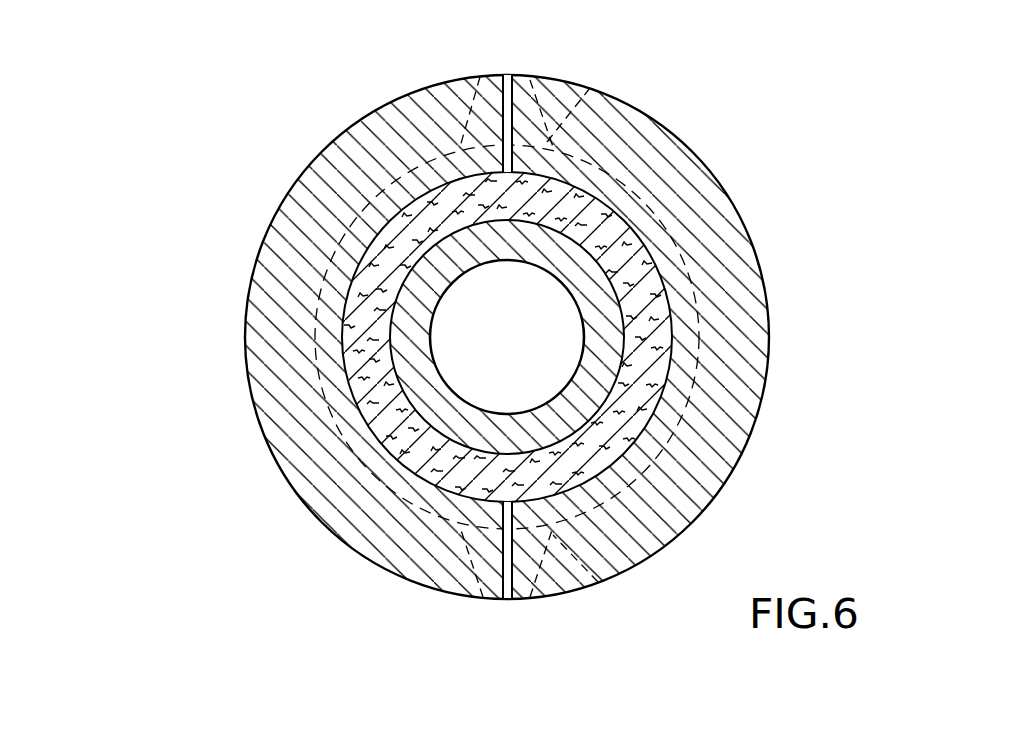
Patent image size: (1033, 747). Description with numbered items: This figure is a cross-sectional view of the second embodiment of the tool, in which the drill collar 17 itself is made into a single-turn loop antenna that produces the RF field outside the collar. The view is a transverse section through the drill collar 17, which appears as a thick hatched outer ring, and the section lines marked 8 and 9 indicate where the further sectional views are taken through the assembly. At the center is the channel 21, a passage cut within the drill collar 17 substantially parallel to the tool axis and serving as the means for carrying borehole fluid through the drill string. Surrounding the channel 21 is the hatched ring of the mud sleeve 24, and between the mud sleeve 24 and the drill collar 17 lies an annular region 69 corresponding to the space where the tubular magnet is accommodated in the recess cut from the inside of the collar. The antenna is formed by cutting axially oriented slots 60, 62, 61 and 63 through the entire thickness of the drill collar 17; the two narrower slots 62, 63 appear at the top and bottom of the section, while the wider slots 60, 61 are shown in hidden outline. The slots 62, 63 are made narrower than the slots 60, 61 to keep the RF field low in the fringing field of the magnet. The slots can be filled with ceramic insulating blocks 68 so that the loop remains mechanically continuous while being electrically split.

The drill collar 17 is at (678, 157).
The packing / filler ring 69 is at (370, 282).
The mud sleeve 24 is at (593, 392).
The channel 21 is at (522, 347).
The slot 63 is at (513, 75).
The slot 62 is at (513, 597).
The ceramic insulating blocks 68 is at (502, 75).
The slot 61 is at (598, 85).
The slot 60 is at (605, 585).
The section line 8- 8 is at (448, 32).
The section line 9- 9 is at (192, 277).